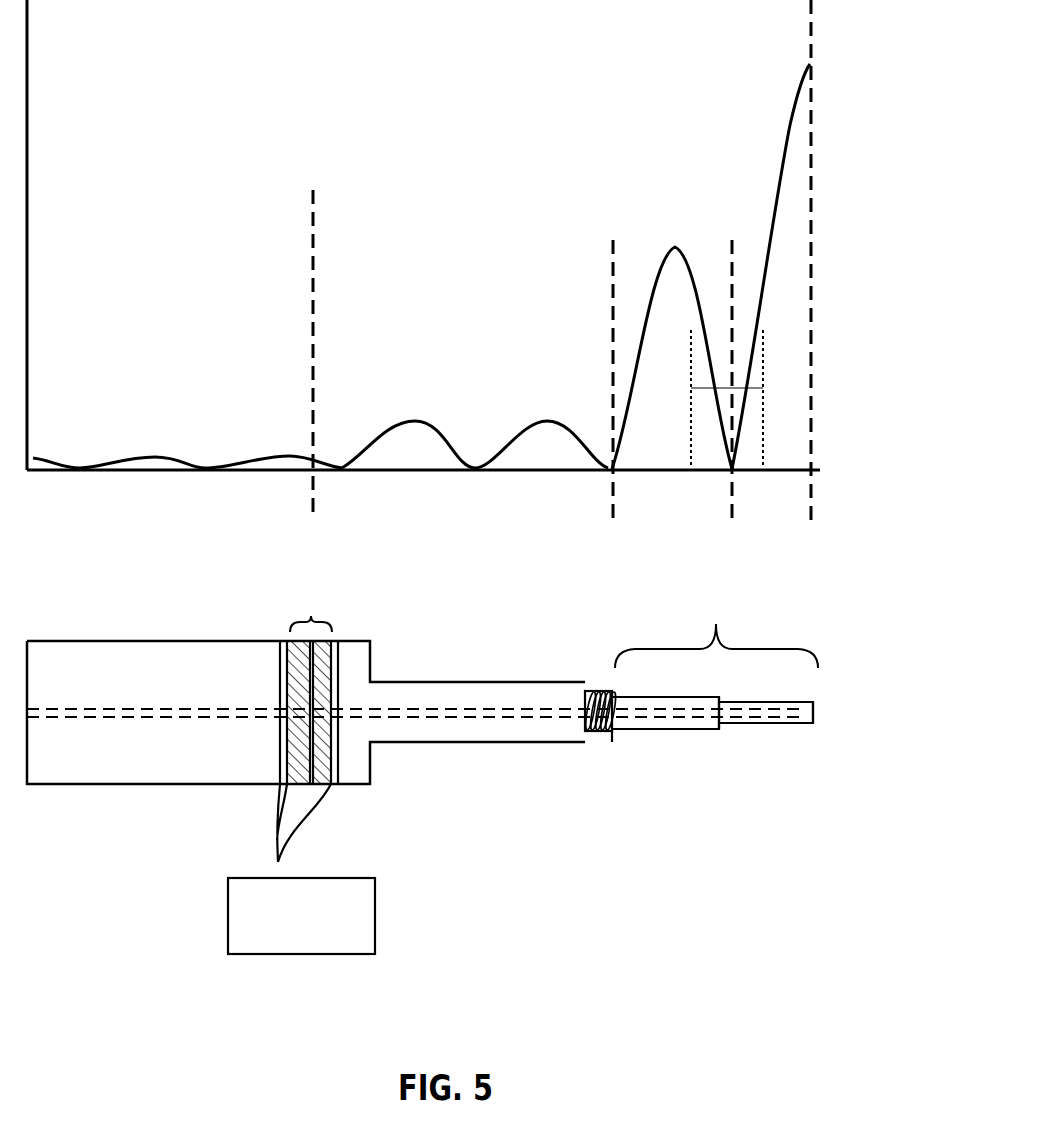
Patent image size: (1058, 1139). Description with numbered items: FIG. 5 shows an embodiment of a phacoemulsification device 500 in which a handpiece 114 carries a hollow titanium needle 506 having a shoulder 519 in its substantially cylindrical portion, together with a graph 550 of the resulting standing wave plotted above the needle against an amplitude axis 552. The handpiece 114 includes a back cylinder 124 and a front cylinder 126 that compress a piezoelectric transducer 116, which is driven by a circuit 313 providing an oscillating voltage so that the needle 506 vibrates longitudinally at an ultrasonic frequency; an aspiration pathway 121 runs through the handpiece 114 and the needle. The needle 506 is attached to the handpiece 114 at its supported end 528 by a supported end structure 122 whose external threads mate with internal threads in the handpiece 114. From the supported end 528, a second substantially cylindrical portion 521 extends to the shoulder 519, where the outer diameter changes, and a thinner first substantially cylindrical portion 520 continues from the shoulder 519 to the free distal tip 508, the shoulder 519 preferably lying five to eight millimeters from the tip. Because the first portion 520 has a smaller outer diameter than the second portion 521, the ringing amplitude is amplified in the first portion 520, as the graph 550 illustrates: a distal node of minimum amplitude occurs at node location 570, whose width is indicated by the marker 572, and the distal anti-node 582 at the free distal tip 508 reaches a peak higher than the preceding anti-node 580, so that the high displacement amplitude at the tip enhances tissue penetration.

The signal amplitude axis 552 is at (30, 3).
The graph 550 is at (150, 458).
The anti-node 580 is at (672, 247).
The distal anti-node 582 is at (808, 63).
The null width 572 is at (763, 373).
The node location 570 is at (730, 478).
The handpiece 114 is at (449, 755).
The piezoelectric transducer 116 is at (313, 614).
The back cylinder 124 is at (157, 784).
The aspiration pathway 121 is at (242, 717).
The front cylinder 126 is at (518, 742).
The supported end structure 122 is at (602, 734).
The device 500 is at (484, 652).
The hollow titanium needle 506 is at (741, 729).
The second substantially cylindrical portion 521 is at (695, 730).
The first substantially cylindrical portion 520 is at (776, 730).
The shoulder 519 is at (722, 752).
The supported end 528 is at (633, 745).
The free distal tip 508 is at (824, 705).
The circuit 313 is at (301, 916).